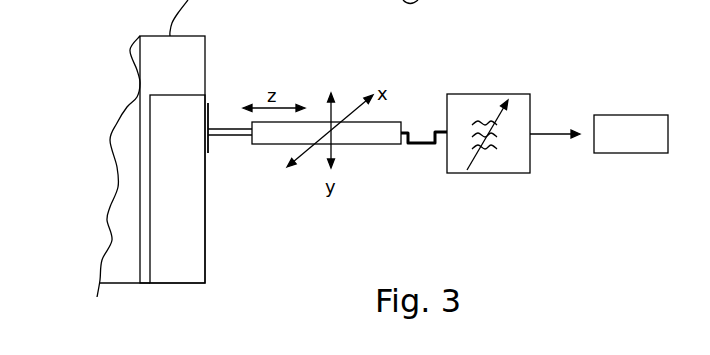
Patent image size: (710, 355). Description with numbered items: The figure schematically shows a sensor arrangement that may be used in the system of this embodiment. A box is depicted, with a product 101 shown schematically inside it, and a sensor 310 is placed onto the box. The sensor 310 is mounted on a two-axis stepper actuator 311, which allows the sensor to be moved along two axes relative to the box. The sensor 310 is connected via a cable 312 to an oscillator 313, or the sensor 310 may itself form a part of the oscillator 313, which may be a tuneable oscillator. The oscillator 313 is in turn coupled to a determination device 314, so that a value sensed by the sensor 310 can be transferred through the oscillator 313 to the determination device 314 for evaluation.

The product 101 is at (148, 115).
The sensor 310 is at (209, 150).
The two-axis stepper actuator 311 is at (377, 144).
The cable 312 is at (407, 130).
The oscillator 313 is at (488, 94).
The determination device 314 is at (632, 115).